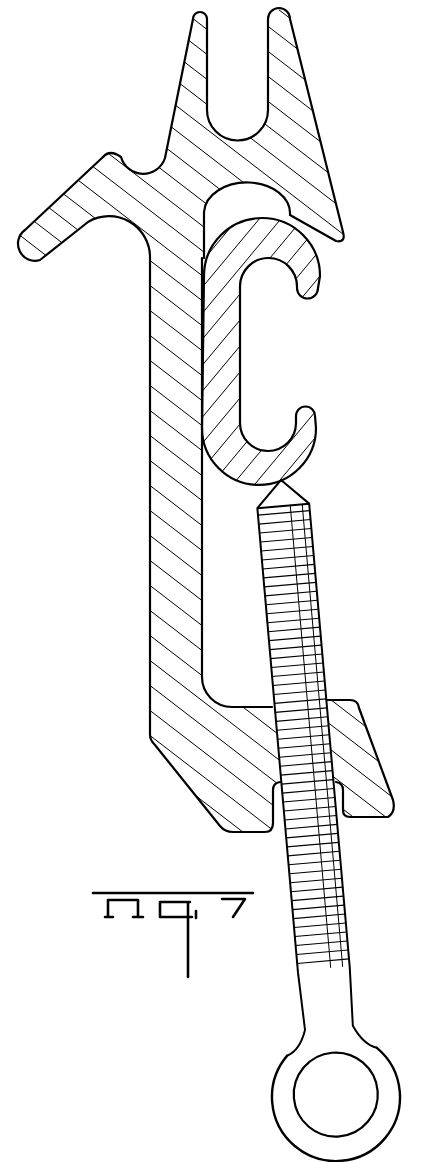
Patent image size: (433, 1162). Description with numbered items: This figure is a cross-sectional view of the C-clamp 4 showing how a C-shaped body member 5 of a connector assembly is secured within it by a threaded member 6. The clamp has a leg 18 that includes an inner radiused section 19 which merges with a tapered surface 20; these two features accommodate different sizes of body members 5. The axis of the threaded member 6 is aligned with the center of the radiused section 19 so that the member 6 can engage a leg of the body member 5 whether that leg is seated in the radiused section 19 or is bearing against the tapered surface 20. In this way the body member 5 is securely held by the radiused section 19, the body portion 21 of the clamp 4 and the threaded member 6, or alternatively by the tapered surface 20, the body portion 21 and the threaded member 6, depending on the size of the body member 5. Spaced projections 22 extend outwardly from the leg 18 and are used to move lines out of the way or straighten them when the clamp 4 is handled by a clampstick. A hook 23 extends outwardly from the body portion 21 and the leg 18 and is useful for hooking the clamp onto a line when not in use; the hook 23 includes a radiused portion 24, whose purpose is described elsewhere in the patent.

The C-clamp 4 is at (155, 620).
The C-shaped body member 5 is at (318, 436).
The threaded member 6 is at (337, 937).
The leg 18 is at (318, 157).
The inner radiused section 19 is at (247, 182).
The tapered surface 20 is at (330, 248).
The body portion 21 is at (160, 352).
The spaced projections 22 is at (277, 28).
The hook 23 is at (70, 183).
The radiused portion 24 is at (133, 172).